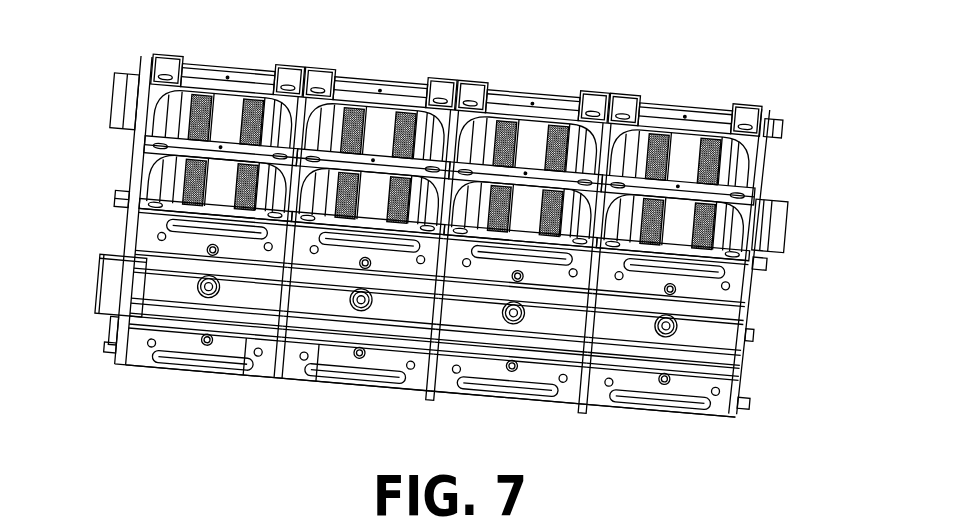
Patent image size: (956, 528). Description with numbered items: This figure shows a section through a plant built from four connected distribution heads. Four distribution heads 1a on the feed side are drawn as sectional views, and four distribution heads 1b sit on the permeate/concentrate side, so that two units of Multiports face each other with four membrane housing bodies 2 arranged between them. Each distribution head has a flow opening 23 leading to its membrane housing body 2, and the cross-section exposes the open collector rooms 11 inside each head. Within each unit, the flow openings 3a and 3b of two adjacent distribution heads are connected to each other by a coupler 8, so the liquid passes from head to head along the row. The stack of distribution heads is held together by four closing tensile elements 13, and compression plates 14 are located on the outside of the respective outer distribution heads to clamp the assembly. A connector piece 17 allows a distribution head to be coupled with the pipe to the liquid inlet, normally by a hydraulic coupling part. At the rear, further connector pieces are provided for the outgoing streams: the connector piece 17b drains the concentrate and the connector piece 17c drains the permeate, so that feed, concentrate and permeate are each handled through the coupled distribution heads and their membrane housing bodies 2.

The distribution head on the feed side 1a is at (259, 378).
The distribution head on the permeate/concentrate side 1b is at (247, 68).
The membrane housing body 2 is at (337, 124).
The flow opening 3a is at (246, 362).
The flow opening 3b is at (311, 368).
The coupler 8 is at (448, 375).
The collector room 11 is at (184, 297).
The closing tensile element 13 is at (763, 278).
The compression plate 14 is at (743, 333).
The connector piece 17 is at (114, 280).
The connector piece for concentrate 17b is at (125, 78).
The connector piece for permeate 17c is at (780, 217).
The flow opening to the membrane housing body 23 is at (206, 298).